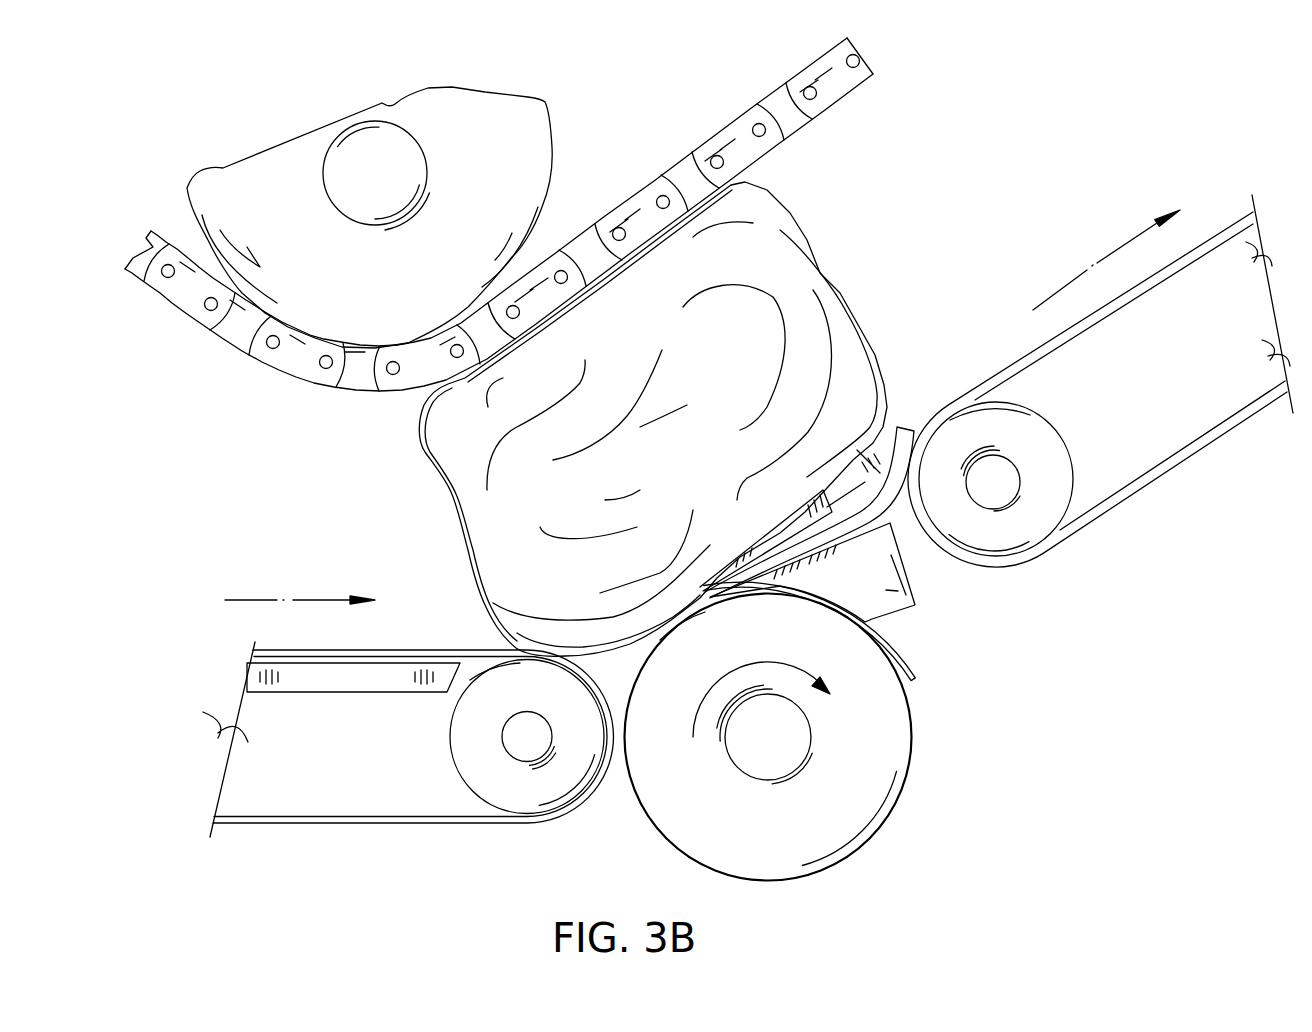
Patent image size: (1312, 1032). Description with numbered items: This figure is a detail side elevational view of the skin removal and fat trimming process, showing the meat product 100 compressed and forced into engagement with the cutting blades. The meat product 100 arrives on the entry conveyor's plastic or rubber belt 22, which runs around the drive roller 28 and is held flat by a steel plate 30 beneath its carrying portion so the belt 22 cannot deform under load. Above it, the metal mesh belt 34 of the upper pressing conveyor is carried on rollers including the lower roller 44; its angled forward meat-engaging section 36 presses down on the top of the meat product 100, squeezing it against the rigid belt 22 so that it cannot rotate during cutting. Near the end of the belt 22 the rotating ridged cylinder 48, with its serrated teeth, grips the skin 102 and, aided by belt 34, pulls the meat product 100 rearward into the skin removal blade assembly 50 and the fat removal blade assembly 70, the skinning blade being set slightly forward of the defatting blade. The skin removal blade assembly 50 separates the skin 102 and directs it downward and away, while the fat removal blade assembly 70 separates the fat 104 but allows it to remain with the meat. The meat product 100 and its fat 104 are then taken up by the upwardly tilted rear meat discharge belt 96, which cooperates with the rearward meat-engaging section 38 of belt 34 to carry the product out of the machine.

The belt 22 is at (380, 743).
The drive roller 28 is at (520, 773).
The steel plate 30 is at (307, 683).
The belt 34 is at (643, 203).
The forward meat-engaging section 36 is at (231, 345).
The rearward meat-engaging section 38 is at (816, 137).
The lower roller 44 is at (517, 163).
The rotating ridged cylinder 48 is at (853, 768).
The skin removal blade assembly 50 is at (916, 594).
The fat removal blade assembly 70 is at (858, 494).
The rear meat discharge belt 96 is at (1113, 507).
The meat product 100 is at (777, 318).
The skin 102 is at (927, 663).
The fat 104 is at (922, 567).